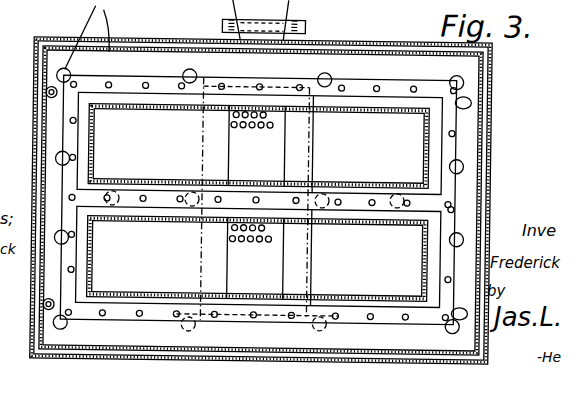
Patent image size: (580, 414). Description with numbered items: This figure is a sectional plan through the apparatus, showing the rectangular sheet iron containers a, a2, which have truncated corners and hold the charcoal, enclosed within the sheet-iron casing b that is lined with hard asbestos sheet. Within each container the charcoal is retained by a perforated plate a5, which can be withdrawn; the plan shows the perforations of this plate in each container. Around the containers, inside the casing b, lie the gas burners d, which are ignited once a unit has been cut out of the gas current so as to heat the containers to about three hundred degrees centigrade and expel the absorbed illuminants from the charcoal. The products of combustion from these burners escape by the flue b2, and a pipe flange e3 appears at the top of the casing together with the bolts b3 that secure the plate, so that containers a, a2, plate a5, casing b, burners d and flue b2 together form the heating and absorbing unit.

The rectangular sheet iron container a is at (258, 256).
The upper compartment of receptacle a2 is at (259, 143).
The perforated plate a5 is at (256, 203).
The sheet-iron casing b is at (490, 124).
The flue b2 is at (110, 194).
The bolt b3 is at (194, 329).
The gas burner d is at (345, 89).
The pipe flange e3 is at (303, 30).